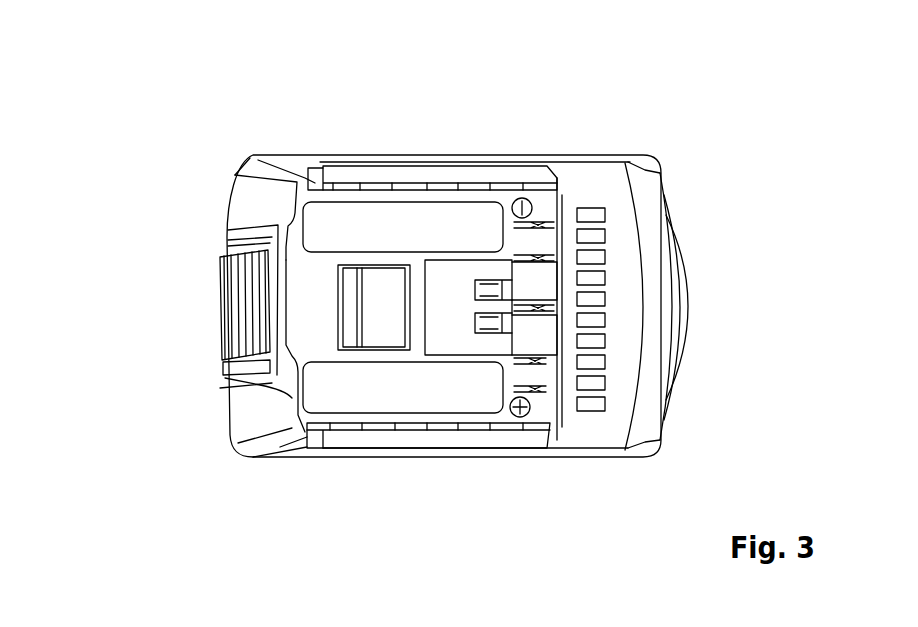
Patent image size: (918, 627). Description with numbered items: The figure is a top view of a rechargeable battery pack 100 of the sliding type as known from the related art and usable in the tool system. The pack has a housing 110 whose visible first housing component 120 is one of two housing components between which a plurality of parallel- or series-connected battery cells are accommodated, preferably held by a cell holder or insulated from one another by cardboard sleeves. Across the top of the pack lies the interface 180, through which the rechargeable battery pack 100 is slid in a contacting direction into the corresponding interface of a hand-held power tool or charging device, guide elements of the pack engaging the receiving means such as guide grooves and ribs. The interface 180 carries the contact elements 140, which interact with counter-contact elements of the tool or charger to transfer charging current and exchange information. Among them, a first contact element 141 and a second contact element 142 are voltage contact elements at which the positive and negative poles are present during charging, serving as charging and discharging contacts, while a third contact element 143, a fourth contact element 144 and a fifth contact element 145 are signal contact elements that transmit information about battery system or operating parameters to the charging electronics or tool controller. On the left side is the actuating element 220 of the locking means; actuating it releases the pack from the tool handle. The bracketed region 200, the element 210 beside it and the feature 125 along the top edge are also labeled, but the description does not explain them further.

The rechargeable battery pack 100 is at (224, 112).
The housing 110 is at (212, 155).
The first housing component 120 is at (238, 413).
The guide rail 125 is at (452, 160).
The contact elements 140 is at (737, 118).
The first contact element 141 is at (554, 225).
The second contact element 142 is at (546, 389).
The third contact element 143 is at (554, 258).
The fourth contact element 144 is at (554, 308).
The fifth contact element 145 is at (546, 361).
The interface 180 is at (609, 124).
The display unit 200 is at (147, 225).
The operating element 210 is at (380, 284).
The actuating element 220 is at (223, 311).